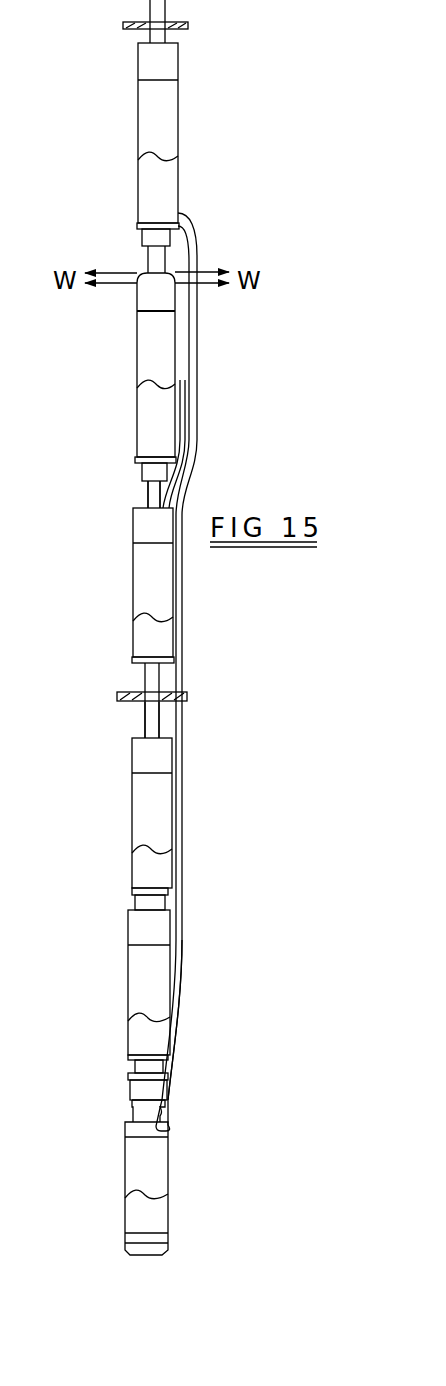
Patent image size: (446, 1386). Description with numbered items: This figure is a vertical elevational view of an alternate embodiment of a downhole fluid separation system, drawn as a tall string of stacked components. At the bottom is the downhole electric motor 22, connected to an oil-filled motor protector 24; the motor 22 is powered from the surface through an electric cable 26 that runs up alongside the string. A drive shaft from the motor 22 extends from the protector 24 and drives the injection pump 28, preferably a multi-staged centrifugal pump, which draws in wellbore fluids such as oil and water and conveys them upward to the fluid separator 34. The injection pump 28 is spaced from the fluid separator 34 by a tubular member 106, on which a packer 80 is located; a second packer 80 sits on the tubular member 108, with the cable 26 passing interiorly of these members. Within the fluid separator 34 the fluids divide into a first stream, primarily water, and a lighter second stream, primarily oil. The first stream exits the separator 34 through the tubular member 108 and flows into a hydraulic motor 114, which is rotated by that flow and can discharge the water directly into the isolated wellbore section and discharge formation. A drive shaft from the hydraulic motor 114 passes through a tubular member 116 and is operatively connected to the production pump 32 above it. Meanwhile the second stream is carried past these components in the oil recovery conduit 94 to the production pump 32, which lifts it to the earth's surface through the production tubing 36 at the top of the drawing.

The downhole electric motor 22 is at (172, 1197).
The oil-filled motor protector 24 is at (175, 1003).
The cable 26 is at (180, 933).
The injection pump 28 is at (175, 798).
The production pump 32 is at (181, 135).
The fluid separator 34 is at (177, 615).
The production tubing 36 is at (147, 3).
The packer 80 is at (199, 25).
The oil recovery conduit 94 is at (201, 451).
The tubular member 106 is at (153, 720).
The tubular member 108 is at (143, 497).
The hydraulic motor 114 is at (178, 346).
The tubular member 116 is at (200, 248).